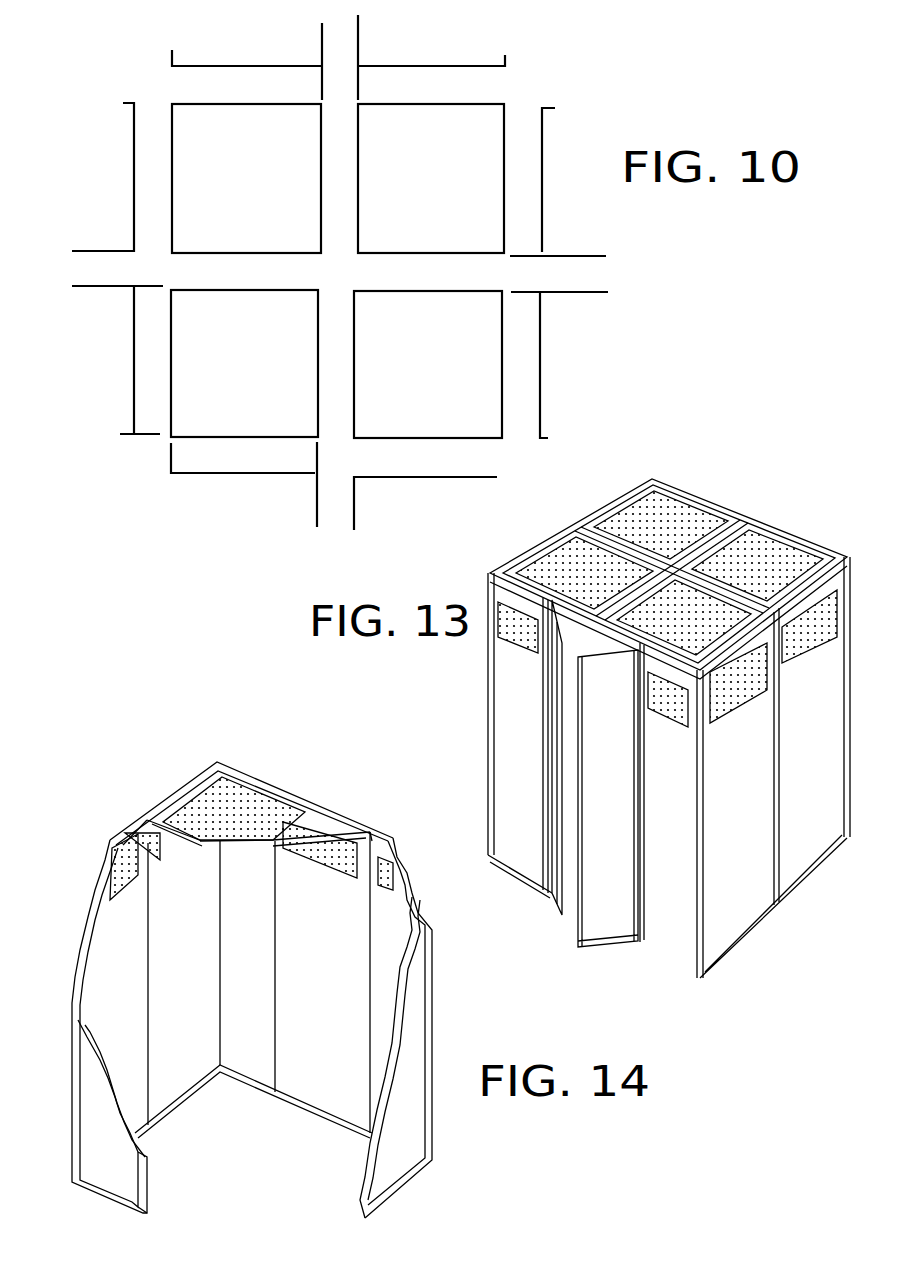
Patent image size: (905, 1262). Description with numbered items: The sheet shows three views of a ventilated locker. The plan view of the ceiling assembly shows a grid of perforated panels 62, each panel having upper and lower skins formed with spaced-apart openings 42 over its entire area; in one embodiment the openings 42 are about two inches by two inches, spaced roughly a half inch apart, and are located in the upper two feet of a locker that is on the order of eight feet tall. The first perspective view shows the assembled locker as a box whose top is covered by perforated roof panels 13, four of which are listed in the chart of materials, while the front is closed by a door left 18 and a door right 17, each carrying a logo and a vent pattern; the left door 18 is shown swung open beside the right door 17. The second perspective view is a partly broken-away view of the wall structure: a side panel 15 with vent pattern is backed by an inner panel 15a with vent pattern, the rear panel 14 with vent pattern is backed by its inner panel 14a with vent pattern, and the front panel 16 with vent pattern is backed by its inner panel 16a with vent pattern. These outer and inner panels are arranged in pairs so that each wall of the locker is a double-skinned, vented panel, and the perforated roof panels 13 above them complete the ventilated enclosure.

In FIG. 10, the openings 42 is at (320, 164).
In FIG. 10, the perforated panels 62 is at (552, 322).
In FIG. 13, the door right with logo and vent pattern 17 is at (622, 910).
In FIG. 13, the door left with logo and vent pattern 18 is at (556, 733).
In FIG. 14, the roof panel perforated 13 is at (242, 842).
In FIG. 14, the rear panel with vent pattern 14 is at (400, 867).
In FIG. 14, the inner panel with vent pattern 14a is at (402, 908).
In FIG. 14, the side panel with vent pattern 15 is at (108, 858).
In FIG. 14, the inner panel with vent pattern 15a is at (112, 903).
In FIG. 14, the front panel with vent pattern 16 is at (98, 1082).
In FIG. 14, the inner panel with vent pattern 16a is at (88, 1038).